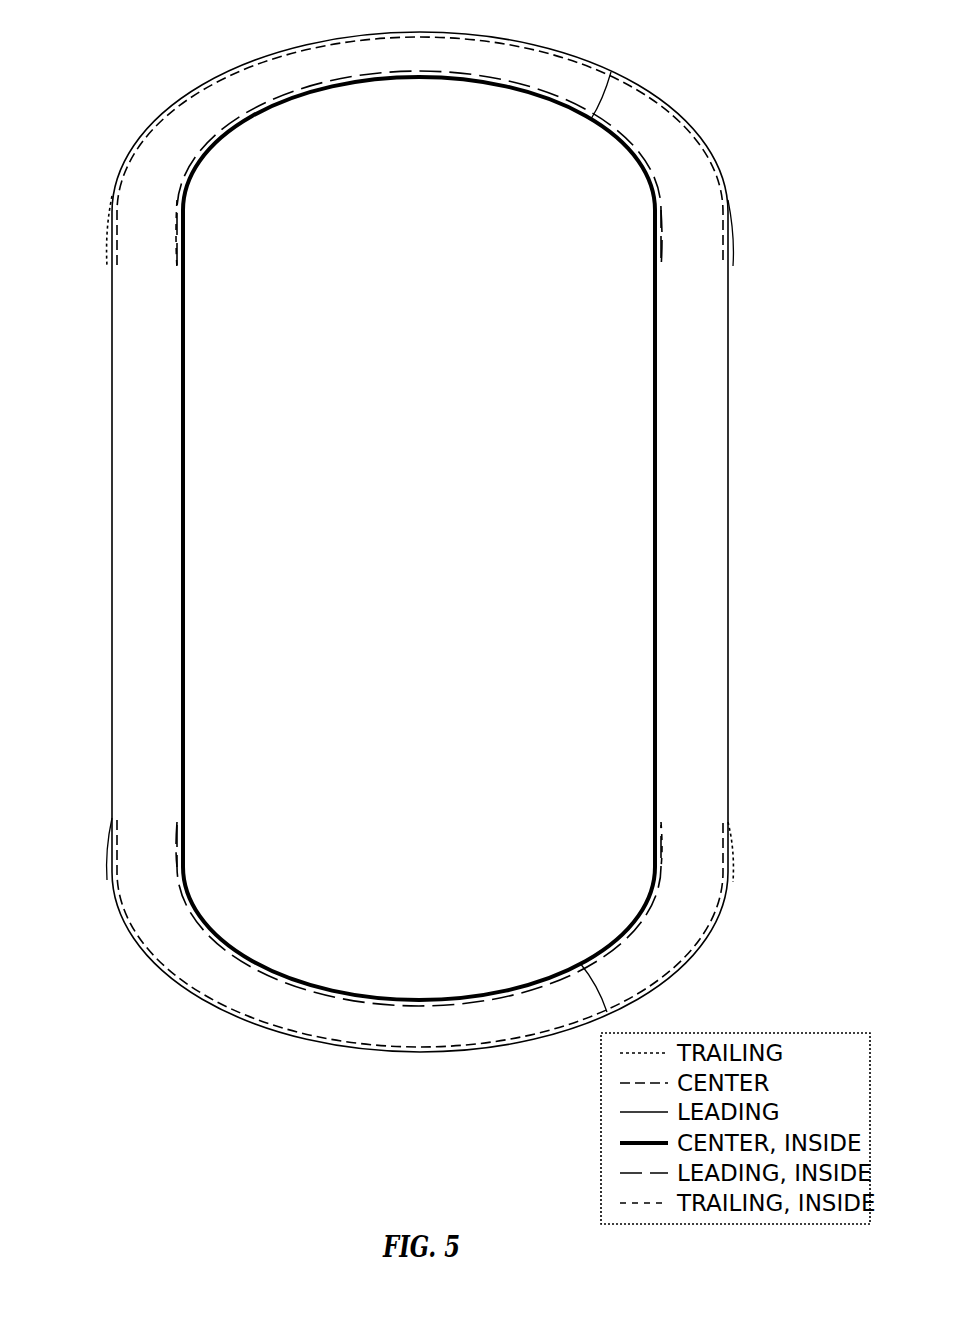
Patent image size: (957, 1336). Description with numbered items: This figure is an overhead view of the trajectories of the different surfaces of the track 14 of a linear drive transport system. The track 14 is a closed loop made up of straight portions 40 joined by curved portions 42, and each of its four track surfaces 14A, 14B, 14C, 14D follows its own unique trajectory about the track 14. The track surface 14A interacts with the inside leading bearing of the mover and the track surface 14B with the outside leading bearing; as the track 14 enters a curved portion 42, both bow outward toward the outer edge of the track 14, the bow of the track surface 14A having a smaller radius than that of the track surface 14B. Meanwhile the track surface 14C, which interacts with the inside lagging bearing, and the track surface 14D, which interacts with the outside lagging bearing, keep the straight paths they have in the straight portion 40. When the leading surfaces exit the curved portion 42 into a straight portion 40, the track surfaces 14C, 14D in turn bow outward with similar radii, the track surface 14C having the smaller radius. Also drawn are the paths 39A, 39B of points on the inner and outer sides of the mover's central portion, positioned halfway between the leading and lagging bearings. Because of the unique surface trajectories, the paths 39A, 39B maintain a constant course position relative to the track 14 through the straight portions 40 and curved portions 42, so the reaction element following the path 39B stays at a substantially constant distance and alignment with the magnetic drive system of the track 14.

The track 14 is at (738, 503).
The track surface 14A is at (663, 215).
The track surface 14B is at (734, 233).
The track surface 14C is at (177, 218).
The track surface 14D is at (106, 231).
The path 39A is at (517, 96).
The path 39B is at (590, 120).
The straight portion 40 is at (757, 589).
The curved portion 42 is at (316, 29).